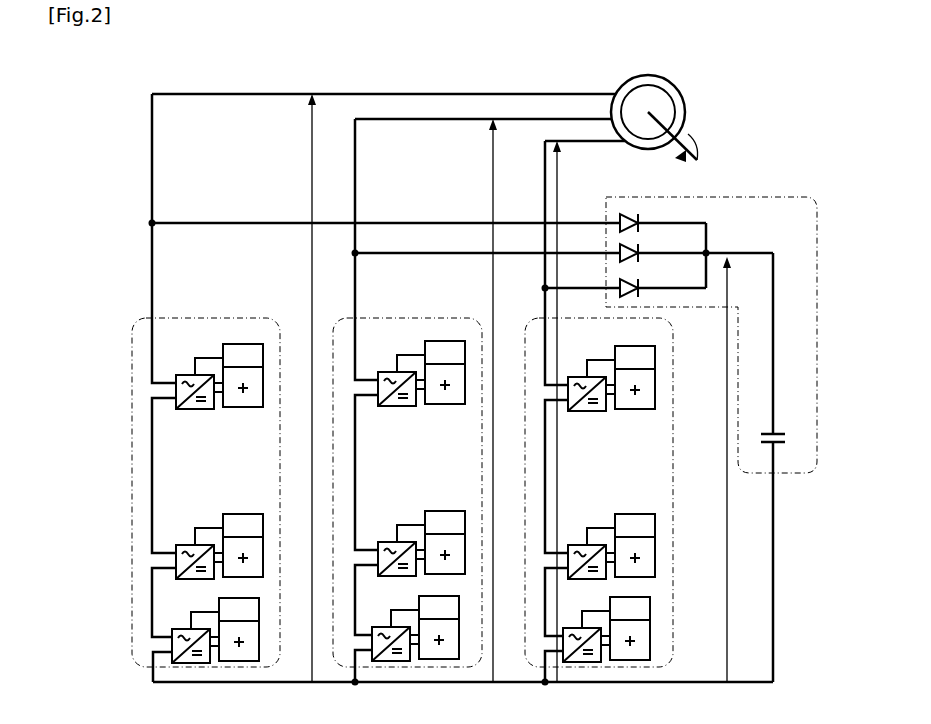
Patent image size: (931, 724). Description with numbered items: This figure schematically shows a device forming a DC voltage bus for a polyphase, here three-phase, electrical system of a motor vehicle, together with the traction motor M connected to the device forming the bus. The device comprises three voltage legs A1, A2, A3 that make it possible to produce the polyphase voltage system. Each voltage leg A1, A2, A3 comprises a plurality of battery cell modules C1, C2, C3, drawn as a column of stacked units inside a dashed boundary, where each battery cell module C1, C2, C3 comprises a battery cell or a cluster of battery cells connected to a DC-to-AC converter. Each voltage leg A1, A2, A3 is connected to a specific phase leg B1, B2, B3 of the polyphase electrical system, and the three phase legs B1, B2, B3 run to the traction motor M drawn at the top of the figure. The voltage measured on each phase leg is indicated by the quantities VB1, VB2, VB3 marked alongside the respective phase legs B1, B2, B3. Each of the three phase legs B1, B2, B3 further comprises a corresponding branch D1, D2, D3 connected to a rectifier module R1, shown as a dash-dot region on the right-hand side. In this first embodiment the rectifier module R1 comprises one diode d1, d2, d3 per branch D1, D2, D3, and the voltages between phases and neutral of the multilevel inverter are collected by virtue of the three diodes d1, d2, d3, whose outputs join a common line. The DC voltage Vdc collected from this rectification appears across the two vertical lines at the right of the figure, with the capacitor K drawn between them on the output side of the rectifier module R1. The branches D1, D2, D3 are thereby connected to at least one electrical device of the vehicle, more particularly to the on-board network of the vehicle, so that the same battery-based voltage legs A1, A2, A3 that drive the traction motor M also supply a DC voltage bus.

The traction motor M is at (674, 88).
The first phase leg B1 is at (209, 96).
The second phase leg B2 is at (417, 121).
The third phase leg B3 is at (596, 142).
The first branch D1 is at (218, 222).
The second branch D2 is at (464, 253).
The third branch D3 is at (575, 285).
The first diode d1 is at (640, 212).
The second diode d2 is at (629, 253).
The third diode d3 is at (629, 288).
The rectifier module R1 is at (818, 334).
The DC link capacitor K is at (786, 436).
The first voltage leg A1 is at (182, 500).
The second voltage leg A2 is at (407, 500).
The third voltage leg A3 is at (599, 500).
The battery cell module C1 is at (263, 408).
The battery cell module C2 is at (466, 402).
The battery cell module C3 is at (655, 408).
The first string voltage VB1 is at (325, 388).
The second string voltage VB2 is at (506, 400).
The third string voltage VB3 is at (569, 411).
The DC voltage Vdc is at (742, 469).